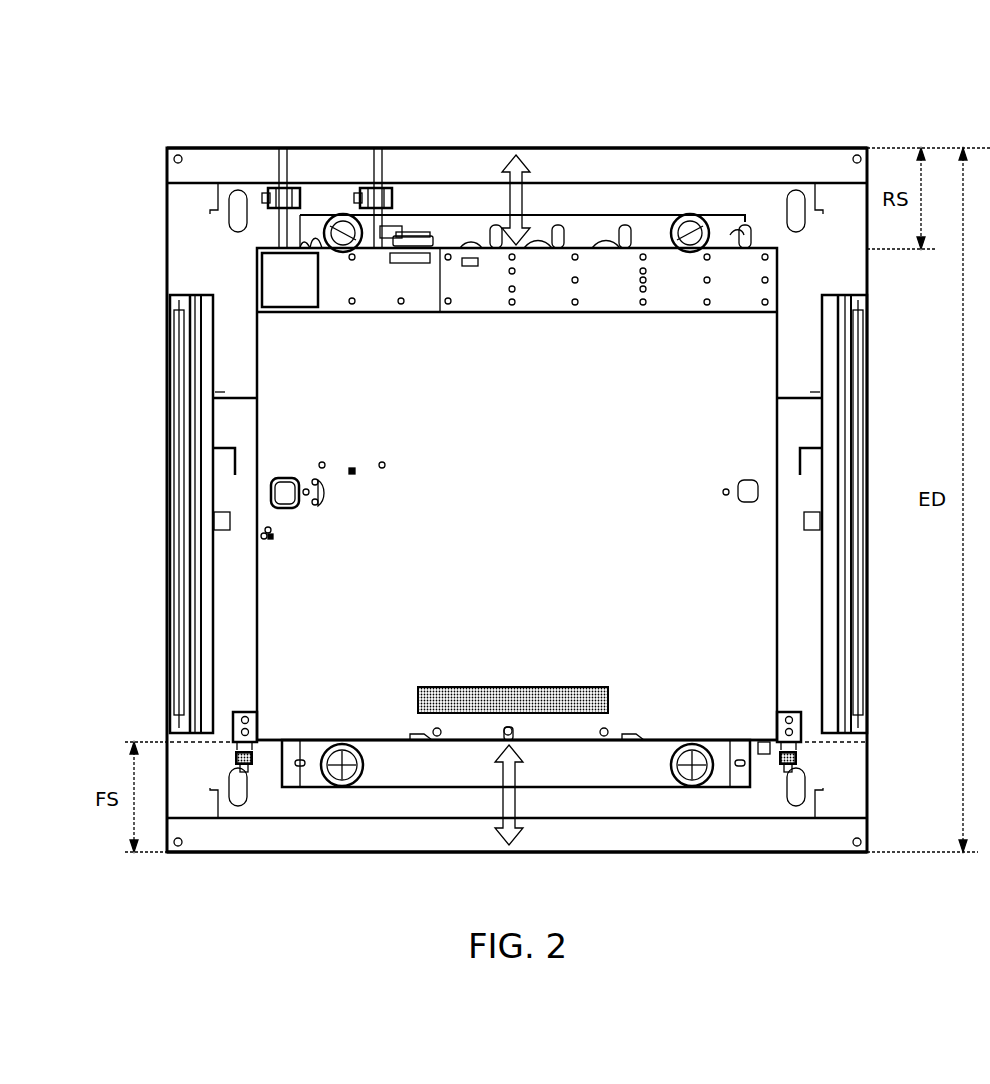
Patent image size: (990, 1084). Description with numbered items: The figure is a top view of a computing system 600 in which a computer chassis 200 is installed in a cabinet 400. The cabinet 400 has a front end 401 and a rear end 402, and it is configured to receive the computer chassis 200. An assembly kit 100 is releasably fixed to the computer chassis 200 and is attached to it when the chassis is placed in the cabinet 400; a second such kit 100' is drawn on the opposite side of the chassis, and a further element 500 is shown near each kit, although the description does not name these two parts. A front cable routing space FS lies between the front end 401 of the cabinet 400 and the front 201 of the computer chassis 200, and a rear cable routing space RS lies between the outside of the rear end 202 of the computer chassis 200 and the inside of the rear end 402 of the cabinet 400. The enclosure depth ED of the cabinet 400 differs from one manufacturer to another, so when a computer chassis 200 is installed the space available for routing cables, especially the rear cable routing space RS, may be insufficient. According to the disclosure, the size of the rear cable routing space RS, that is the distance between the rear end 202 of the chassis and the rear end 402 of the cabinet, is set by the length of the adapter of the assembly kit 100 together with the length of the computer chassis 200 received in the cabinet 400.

The computing system 600 is at (866, 82).
The cabinet 400 is at (182, 246).
The front end of the cabinet 401 is at (443, 852).
The rear end of the cabinet 402 is at (640, 148).
The computer chassis 200 is at (447, 558).
The front of the computer chassis 201 is at (264, 748).
The rear end of the computer chassis 202 is at (762, 250).
The assembly kit 100 is at (832, 814).
The damper / supporting unit (left) 100' is at (204, 814).
The adjustment knob 500 is at (245, 768).